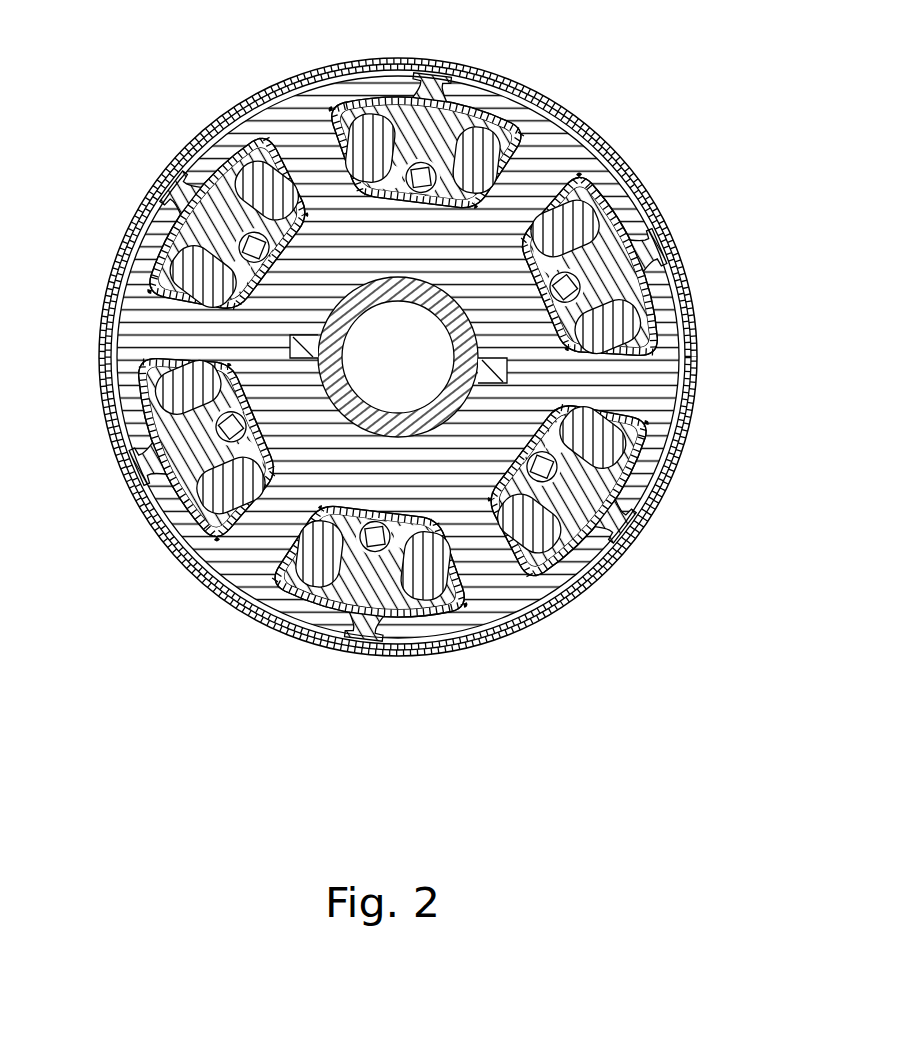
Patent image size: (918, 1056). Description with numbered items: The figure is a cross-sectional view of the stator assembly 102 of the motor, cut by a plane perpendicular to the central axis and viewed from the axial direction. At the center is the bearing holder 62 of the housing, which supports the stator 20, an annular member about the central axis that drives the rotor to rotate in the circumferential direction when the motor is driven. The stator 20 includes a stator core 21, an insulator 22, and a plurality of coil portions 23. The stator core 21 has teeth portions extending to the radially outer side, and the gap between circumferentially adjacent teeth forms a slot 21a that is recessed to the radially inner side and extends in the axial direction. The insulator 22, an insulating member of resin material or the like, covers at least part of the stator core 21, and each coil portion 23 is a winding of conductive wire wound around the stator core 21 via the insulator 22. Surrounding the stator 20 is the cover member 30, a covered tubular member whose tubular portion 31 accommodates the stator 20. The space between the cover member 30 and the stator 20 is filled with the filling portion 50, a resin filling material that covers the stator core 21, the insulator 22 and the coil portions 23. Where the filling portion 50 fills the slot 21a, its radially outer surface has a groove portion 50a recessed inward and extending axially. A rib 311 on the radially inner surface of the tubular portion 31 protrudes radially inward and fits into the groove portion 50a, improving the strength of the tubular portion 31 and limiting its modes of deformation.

The stator assembly 102 is at (557, 91).
The stator 20 is at (93, 86).
The stator core 21 is at (307, 133).
The insulator 22 is at (233, 157).
The coil portions 23 is at (260, 203).
The bearing holder 62 is at (317, 372).
The filling portion 50 is at (180, 442).
The groove portion 50a is at (137, 467).
The slot 21a is at (168, 455).
The rib 311 is at (123, 433).
The tubular portion 31 is at (190, 560).
The cover member 30 is at (374, 366).